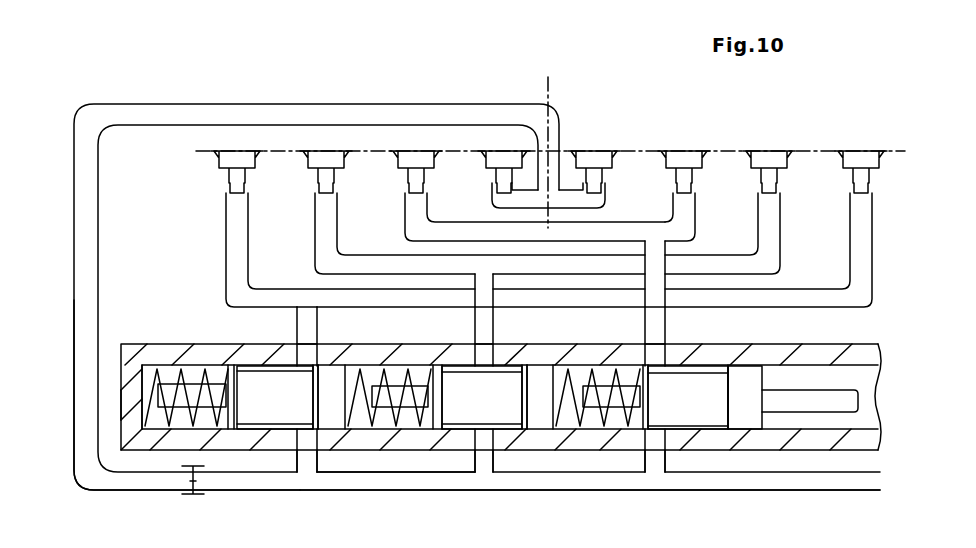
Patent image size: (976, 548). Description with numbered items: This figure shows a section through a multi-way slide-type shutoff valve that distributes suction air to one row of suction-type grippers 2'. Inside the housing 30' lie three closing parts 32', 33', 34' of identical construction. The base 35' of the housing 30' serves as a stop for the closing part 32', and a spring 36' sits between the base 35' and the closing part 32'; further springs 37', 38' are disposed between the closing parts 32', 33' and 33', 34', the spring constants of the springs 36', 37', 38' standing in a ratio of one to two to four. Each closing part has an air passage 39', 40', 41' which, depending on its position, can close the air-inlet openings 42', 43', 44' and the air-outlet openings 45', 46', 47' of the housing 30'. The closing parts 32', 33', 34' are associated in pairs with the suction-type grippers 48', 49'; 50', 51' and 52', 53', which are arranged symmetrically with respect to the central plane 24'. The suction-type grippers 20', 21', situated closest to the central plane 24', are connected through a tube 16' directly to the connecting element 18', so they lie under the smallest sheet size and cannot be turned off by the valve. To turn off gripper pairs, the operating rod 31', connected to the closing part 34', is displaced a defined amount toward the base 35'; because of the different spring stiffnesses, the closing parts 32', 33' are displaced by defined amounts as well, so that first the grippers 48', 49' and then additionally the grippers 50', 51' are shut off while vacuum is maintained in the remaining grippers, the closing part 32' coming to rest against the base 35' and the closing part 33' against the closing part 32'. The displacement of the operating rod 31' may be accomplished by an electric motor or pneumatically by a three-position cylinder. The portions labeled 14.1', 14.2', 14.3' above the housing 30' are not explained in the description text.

The row of suction-type grippers 2' is at (455, 297).
The tube 16' is at (164, 414).
The connecting element 18' is at (559, 504).
The suction-type gripper 20' is at (541, 134).
The suction-type gripper 21' is at (595, 126).
The central plane 24' is at (550, 129).
The housing 30' is at (452, 397).
The operating rod 31' is at (810, 463).
The closing part 32' is at (253, 451).
The closing part 33' is at (474, 451).
The closing part 34' is at (688, 451).
The base 35' is at (83, 397).
The spring 36' is at (176, 451).
The spring 37' is at (389, 453).
The spring 38' is at (602, 451).
The air passage 39' is at (309, 491).
The air passage 40' is at (482, 488).
The air passage 41' is at (746, 451).
The air-inlet opening 42' is at (278, 389).
The air-inlet opening 43' is at (457, 373).
The air-inlet opening 44' is at (628, 356).
The air-outlet opening 45' is at (338, 451).
The air-outlet opening 46' is at (526, 451).
The air-outlet opening 47' is at (640, 491).
The suction-type gripper 48' is at (340, 183).
The suction-type gripper 49' is at (690, 183).
The suction-type gripper 50' is at (470, 167).
The suction-type gripper 51' is at (730, 167).
The suction-type gripper 52' is at (527, 150).
The suction-type gripper 53' is at (684, 150).
The distributor unit 14.1' is at (342, 325).
The distributor unit 14.2' is at (520, 325).
The distributor unit 14.3' is at (700, 325).